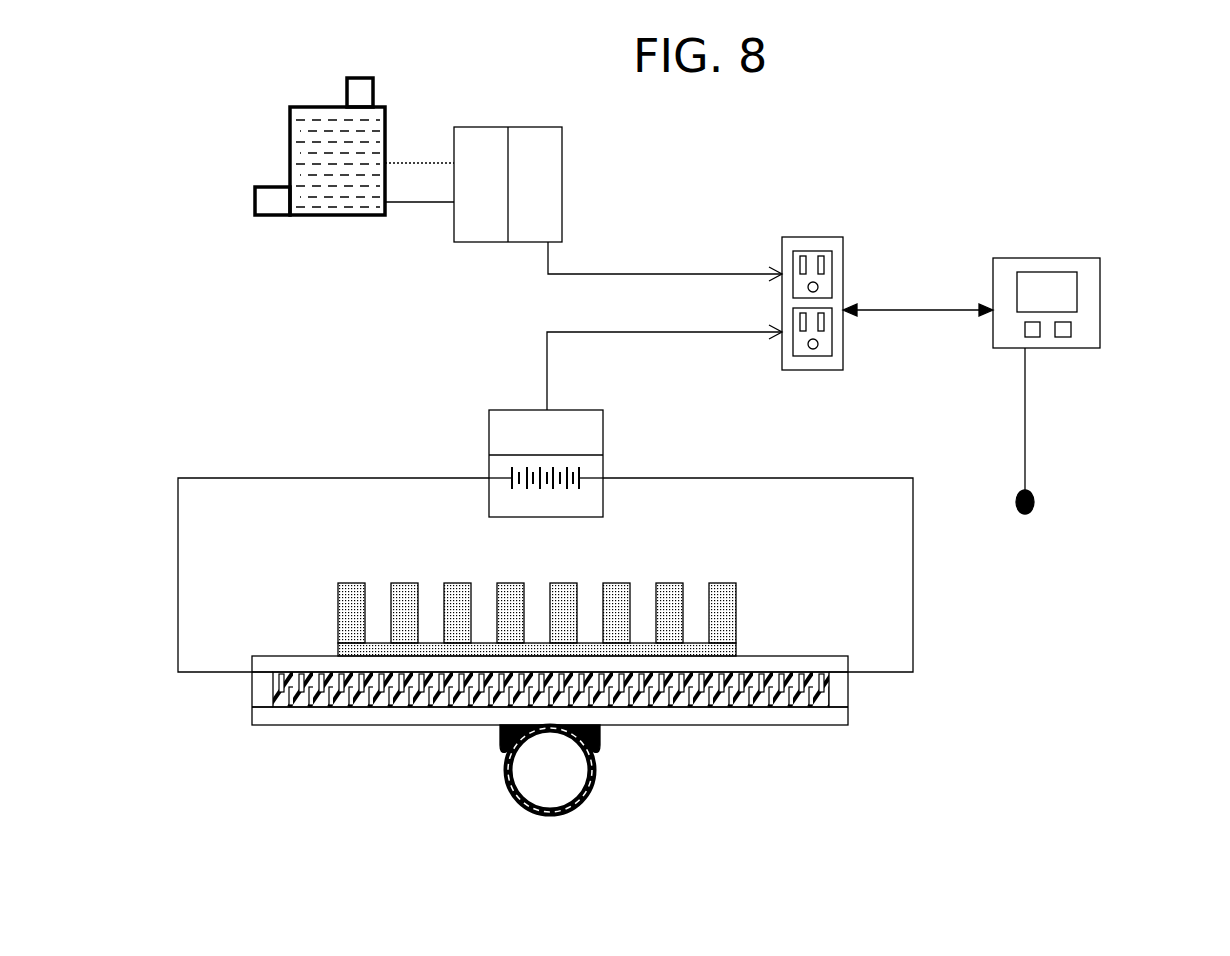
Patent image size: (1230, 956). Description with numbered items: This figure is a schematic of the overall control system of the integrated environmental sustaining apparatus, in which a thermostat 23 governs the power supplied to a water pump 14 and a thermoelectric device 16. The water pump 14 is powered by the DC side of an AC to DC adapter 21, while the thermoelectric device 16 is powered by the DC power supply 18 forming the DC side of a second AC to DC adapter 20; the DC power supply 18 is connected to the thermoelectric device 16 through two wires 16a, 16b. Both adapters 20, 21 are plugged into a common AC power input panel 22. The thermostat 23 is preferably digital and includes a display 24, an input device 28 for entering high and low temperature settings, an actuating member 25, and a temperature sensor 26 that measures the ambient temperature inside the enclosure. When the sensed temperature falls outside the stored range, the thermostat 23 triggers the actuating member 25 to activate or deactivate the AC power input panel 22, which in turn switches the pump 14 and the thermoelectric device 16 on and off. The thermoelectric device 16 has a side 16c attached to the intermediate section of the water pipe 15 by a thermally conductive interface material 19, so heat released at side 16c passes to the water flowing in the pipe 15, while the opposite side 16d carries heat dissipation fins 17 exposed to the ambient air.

The water pump 14 is at (300, 148).
The AC to DC adapter 21 is at (485, 226).
The AC power input panel 22 is at (805, 245).
The AC to DC adapter 20 is at (489, 448).
The DC power supply 18 is at (580, 472).
The actuating member 25 is at (918, 297).
The thermostat 23 is at (1083, 294).
The display 24 is at (1065, 293).
The input device 28 is at (1071, 330).
The temperature sensor 26 is at (1046, 439).
The thermoelectric device 16 is at (530, 697).
The wire 16a is at (877, 670).
The wire 16b is at (232, 670).
The side of thermoelectric device 16c is at (353, 717).
The side of thermoelectric device 16d is at (300, 663).
The heat dissipation fins 17 is at (720, 607).
The interface material 19 is at (597, 740).
The water pipe 15 is at (500, 778).